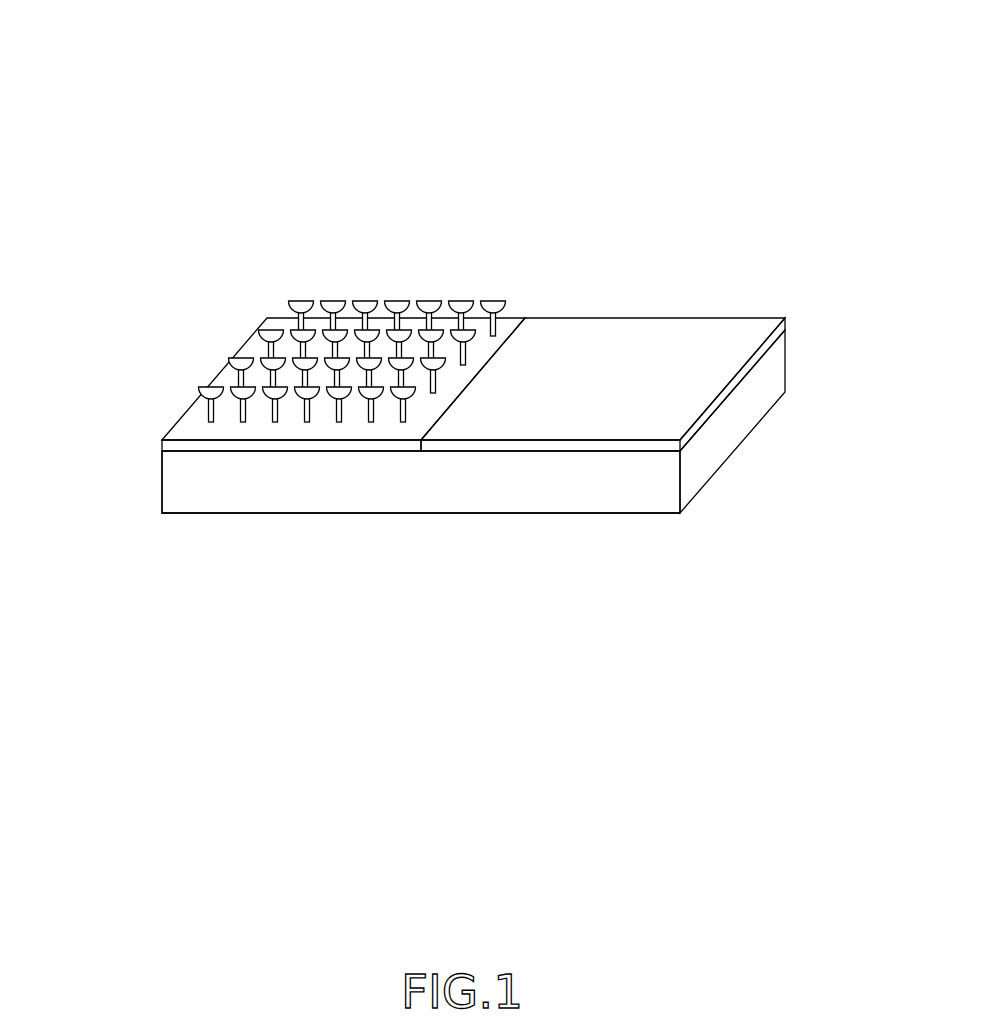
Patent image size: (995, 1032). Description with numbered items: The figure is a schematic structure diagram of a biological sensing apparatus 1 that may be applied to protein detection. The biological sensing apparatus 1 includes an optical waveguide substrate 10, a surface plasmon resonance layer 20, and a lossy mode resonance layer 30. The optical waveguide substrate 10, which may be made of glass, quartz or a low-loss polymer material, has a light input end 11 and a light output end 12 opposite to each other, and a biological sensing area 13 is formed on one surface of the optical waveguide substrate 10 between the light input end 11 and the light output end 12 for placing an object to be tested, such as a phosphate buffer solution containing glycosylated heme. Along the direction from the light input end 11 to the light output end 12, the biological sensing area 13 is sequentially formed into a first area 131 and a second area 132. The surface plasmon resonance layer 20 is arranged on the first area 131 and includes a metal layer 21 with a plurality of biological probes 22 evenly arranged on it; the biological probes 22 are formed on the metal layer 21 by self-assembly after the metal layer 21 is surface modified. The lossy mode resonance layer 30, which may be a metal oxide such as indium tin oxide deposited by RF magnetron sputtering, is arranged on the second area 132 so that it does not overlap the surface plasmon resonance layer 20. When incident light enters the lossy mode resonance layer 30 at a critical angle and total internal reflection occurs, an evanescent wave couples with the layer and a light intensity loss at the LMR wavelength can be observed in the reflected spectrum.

The biological sensing apparatus 1 is at (249, 122).
The optical waveguide substrate 10 is at (266, 487).
The light input end 11 is at (150, 483).
The light output end 12 is at (742, 426).
The biological sensing area 13 is at (473, 351).
The first area 131 is at (352, 465).
The second area 132 is at (558, 465).
The surface plasmon resonance layer 20 is at (304, 307).
The metal layer 21 is at (196, 424).
The biological probes 22 is at (334, 300).
The lossy mode resonance layer 30 is at (664, 340).